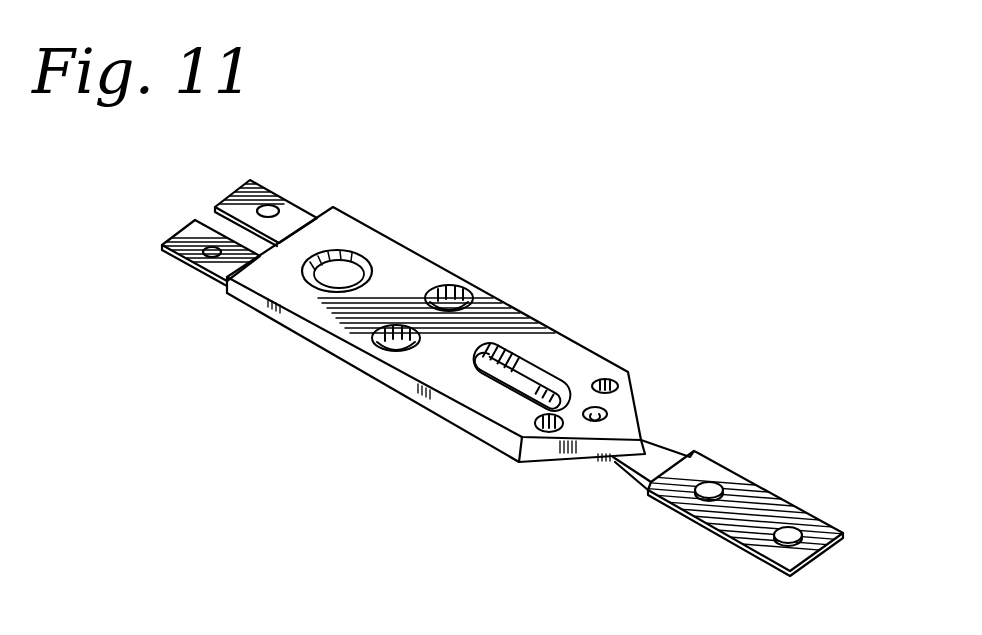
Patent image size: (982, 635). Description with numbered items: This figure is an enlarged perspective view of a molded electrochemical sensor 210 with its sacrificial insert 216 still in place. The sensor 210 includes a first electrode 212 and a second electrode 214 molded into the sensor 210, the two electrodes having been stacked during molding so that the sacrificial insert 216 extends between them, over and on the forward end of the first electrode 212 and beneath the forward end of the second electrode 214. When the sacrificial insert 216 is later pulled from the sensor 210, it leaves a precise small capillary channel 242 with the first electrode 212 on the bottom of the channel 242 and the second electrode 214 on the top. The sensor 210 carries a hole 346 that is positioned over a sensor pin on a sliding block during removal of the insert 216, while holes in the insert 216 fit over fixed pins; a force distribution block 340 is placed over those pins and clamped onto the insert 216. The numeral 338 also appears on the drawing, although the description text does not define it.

The electrochemical sensor 210 is at (436, 324).
The first electrode 212 is at (176, 267).
The second electrode 214 is at (266, 182).
The sacrificial insert 216 is at (755, 492).
The capillary channel 242 is at (610, 461).
The hole 338 is at (737, 428).
The force distribution block 340 is at (726, 571).
The hole 346 is at (391, 220).